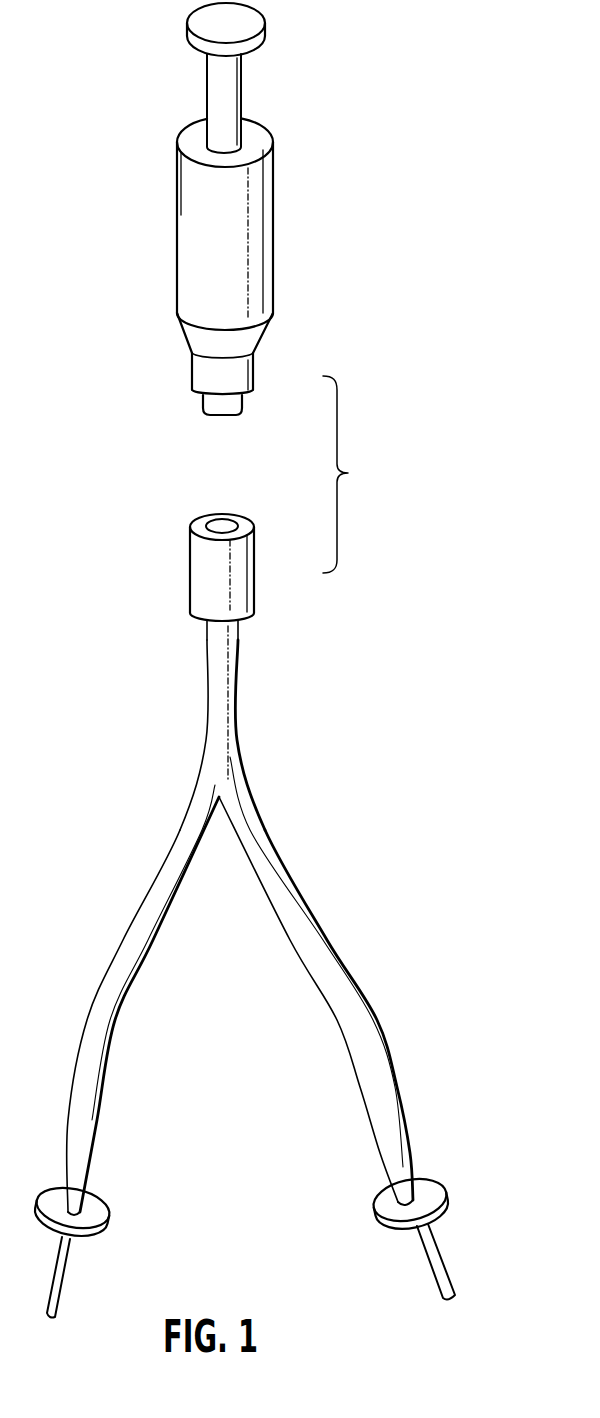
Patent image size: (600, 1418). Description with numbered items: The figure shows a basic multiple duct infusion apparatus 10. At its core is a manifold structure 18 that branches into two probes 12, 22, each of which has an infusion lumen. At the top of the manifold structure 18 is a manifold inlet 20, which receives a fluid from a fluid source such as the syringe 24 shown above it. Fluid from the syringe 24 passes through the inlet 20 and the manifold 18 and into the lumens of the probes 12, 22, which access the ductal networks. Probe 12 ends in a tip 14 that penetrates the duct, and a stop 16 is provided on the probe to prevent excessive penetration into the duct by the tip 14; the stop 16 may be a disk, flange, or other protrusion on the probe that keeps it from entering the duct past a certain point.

The apparatus 10 is at (398, 625).
The probe 12 is at (287, 885).
The tip 14 is at (445, 1268).
The stop 16 is at (437, 1190).
The manifold structure 18 is at (215, 727).
The manifold inlet 20 is at (194, 592).
The probe 22 is at (150, 907).
The syringe 24 is at (266, 243).